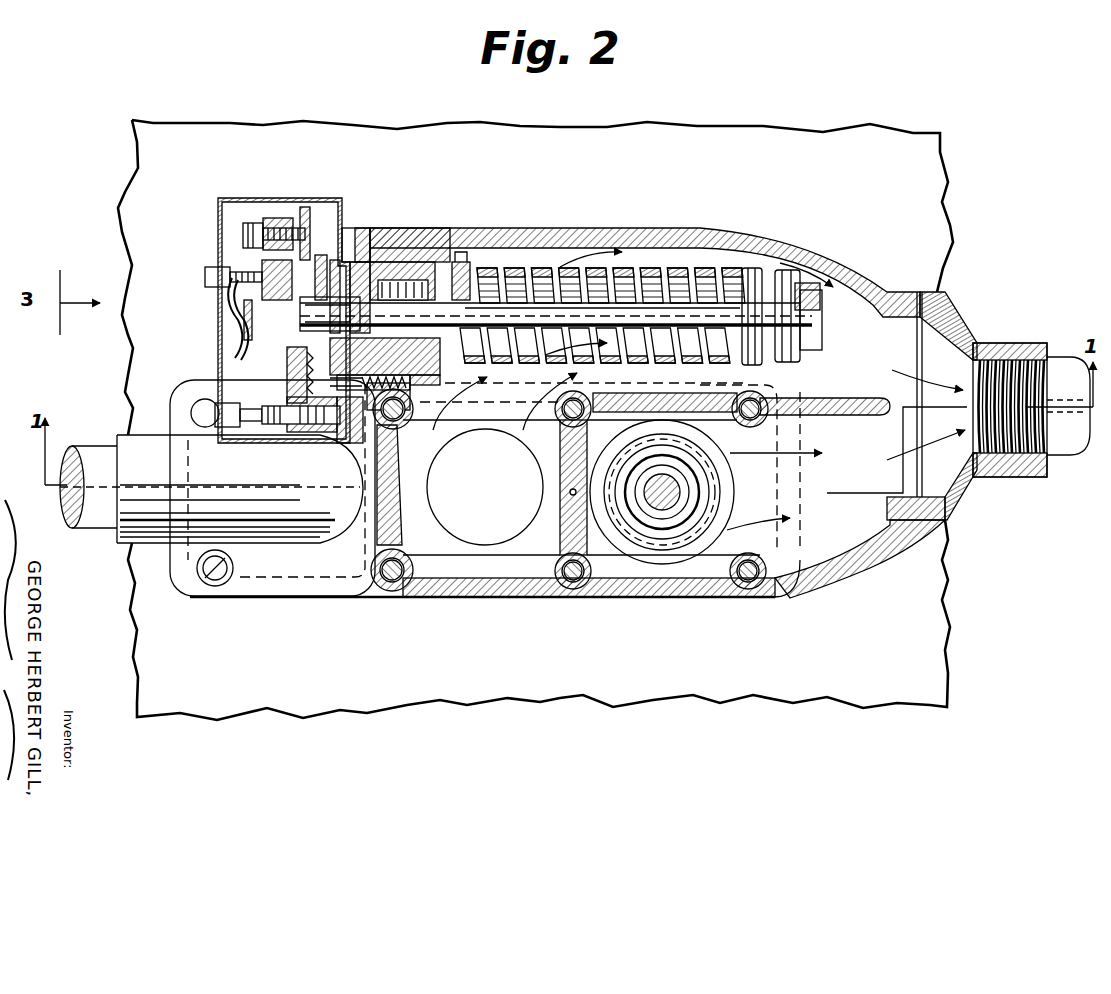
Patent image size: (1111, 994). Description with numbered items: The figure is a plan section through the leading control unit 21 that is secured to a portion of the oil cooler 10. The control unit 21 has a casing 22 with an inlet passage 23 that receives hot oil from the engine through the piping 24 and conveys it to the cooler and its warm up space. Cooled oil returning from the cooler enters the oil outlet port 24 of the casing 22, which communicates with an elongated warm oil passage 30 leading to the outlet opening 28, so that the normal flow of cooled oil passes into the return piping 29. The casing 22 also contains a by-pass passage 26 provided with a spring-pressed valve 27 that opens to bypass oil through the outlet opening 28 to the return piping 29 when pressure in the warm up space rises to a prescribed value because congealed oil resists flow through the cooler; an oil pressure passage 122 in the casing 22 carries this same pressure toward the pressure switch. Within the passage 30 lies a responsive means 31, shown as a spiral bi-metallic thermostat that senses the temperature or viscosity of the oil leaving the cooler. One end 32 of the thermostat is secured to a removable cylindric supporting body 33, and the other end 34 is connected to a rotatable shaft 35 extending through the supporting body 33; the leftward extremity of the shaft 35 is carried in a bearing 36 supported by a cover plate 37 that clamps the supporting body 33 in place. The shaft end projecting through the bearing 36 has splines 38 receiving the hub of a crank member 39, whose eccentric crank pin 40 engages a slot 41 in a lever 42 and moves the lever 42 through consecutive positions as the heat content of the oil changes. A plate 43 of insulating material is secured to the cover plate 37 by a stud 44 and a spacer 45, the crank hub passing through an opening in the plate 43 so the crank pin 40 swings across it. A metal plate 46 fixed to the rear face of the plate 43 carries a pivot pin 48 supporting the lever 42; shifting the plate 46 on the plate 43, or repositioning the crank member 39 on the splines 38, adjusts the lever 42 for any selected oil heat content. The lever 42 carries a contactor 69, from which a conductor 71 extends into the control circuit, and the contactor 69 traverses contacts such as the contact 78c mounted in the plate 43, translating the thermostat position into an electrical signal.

The oil cooler 10 is at (558, 142).
The leading control unit 21 is at (808, 230).
The casing 22 is at (873, 272).
The inlet passage 23 is at (263, 520).
The oil outlet port 24 is at (87, 462).
The by-pass passage 26 is at (827, 517).
The spring-pressed valve 27 is at (670, 520).
The outlet opening 28 is at (907, 353).
The return piping 29 is at (1058, 367).
The warm oil passage 30 is at (640, 253).
The responsive means 31 is at (547, 263).
The end of thermostat 32 is at (487, 263).
The supporting body 33 is at (420, 263).
The other end of thermostat 34 is at (803, 340).
The rotatable shaft 35 is at (670, 313).
The bearing 36 is at (395, 240).
The cover plate 37 is at (365, 258).
The splines 38 is at (335, 265).
The crank member 39 is at (320, 258).
The eccentric crank pin 40 is at (255, 265).
The slot 41 is at (250, 275).
The lever 42 is at (277, 222).
The insulating plate 43 is at (253, 402).
The stud 44 is at (317, 427).
The spacer 45 is at (337, 410).
The metal plate 46 is at (305, 210).
The pivot pin 48 is at (283, 255).
The contactor 69 is at (273, 370).
The conductor 71 is at (233, 323).
The contact 78c is at (263, 383).
The oil pressure passage 122 is at (571, 495).